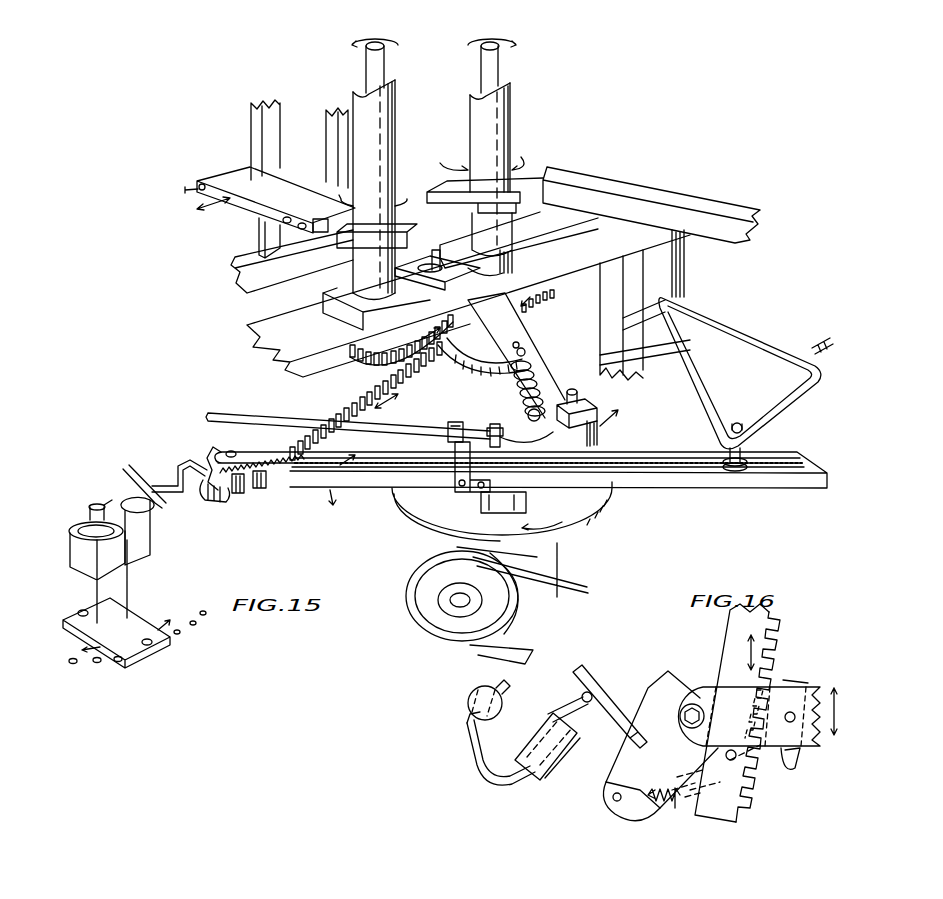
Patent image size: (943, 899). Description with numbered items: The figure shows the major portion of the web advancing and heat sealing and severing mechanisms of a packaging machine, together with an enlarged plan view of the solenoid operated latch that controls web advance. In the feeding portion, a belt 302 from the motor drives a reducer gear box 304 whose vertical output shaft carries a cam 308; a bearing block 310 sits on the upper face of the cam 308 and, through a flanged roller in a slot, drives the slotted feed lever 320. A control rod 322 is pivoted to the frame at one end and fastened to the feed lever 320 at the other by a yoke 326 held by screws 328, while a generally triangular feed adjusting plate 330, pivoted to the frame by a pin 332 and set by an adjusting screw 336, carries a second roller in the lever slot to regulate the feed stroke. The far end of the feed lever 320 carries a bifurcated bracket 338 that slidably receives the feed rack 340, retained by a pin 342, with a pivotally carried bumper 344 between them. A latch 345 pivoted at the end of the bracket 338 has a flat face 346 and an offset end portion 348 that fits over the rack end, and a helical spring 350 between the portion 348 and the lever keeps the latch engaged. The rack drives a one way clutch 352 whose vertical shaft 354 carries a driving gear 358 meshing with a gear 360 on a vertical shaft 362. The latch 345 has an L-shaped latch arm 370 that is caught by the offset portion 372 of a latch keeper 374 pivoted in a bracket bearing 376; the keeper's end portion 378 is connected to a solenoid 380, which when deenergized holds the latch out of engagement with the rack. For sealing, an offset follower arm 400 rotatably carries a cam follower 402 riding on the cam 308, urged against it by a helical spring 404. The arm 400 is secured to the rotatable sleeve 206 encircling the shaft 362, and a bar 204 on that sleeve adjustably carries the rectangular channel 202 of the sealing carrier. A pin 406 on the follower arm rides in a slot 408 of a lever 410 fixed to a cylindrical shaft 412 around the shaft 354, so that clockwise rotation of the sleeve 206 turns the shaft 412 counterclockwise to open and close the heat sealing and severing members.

In FIG. 15, the rectangular channel 202 is at (222, 178).
In FIG. 15, the bar 204 is at (343, 222).
In FIG. 15, the rotatable sleeve 206 is at (387, 114).
In FIG. 15, the belt 302 is at (560, 576).
In FIG. 15, the reducer gear box 304 is at (558, 552).
In FIG. 15, the cam 308 is at (592, 509).
In FIG. 15, the bearing block 310 is at (527, 501).
In FIG. 15, the slotted feed lever 320 is at (700, 471).
In FIG. 15, the control rod 322 is at (240, 416).
In FIG. 15, the yoke 326 is at (462, 456).
In FIG. 15, the screws 328 is at (472, 490).
In FIG. 15, the feed adjusting plate 330 is at (745, 336).
In FIG. 15, the pin 332 is at (685, 270).
In FIG. 15, the adjusting screw 336 is at (809, 350).
In FIG. 15, the bifurcated bracket 338 is at (265, 484).
In FIG. 16, the bifurcated bracket 338 is at (752, 728).
In FIG. 15, the feed rack 340 is at (238, 494).
In FIG. 16, the pin 342 is at (745, 772).
In FIG. 16, the bumper 344 is at (800, 766).
In FIG. 16, the latch 345 is at (626, 770).
In FIG. 16, the latch face 346 is at (674, 800).
In FIG. 16, the offset end portion 348 is at (632, 809).
In FIG. 15, the helical spring 350 is at (208, 500).
In FIG. 16, the helical spring 350 is at (612, 796).
In FIG. 15, the one way clutch 352 is at (461, 372).
In FIG. 15, the vertical shaft 354 is at (500, 62).
In FIG. 15, the driving gear 358 is at (541, 301).
In FIG. 15, the gear 360 is at (371, 372).
In FIG. 15, the vertical shaft 362 is at (384, 58).
In FIG. 15, the latch arm 370 is at (176, 467).
In FIG. 16, the latch arm 370 is at (611, 700).
In FIG. 15, the offset portion 372 is at (137, 480).
In FIG. 16, the offset portion 372 is at (575, 710).
In FIG. 15, the latch keeper 374 is at (85, 535).
In FIG. 16, the latch keeper 374 is at (480, 761).
In FIG. 15, the bracket bearing 376 is at (150, 517).
In FIG. 16, the bracket bearing 376 is at (545, 738).
In FIG. 15, the end portion 378 is at (90, 517).
In FIG. 16, the end portion 378 is at (465, 724).
In FIG. 15, the solenoid 380 is at (80, 562).
In FIG. 16, the solenoid 380 is at (469, 698).
In FIG. 15, the follower arm 400 is at (542, 377).
In FIG. 15, the cam follower 402 is at (598, 434).
In FIG. 15, the helical spring 404 is at (526, 375).
In FIG. 15, the pin 406 is at (436, 250).
In FIG. 15, the slot 408 is at (453, 263).
In FIG. 15, the lever 410 is at (497, 258).
In FIG. 15, the cylindrical shaft 412 is at (512, 115).